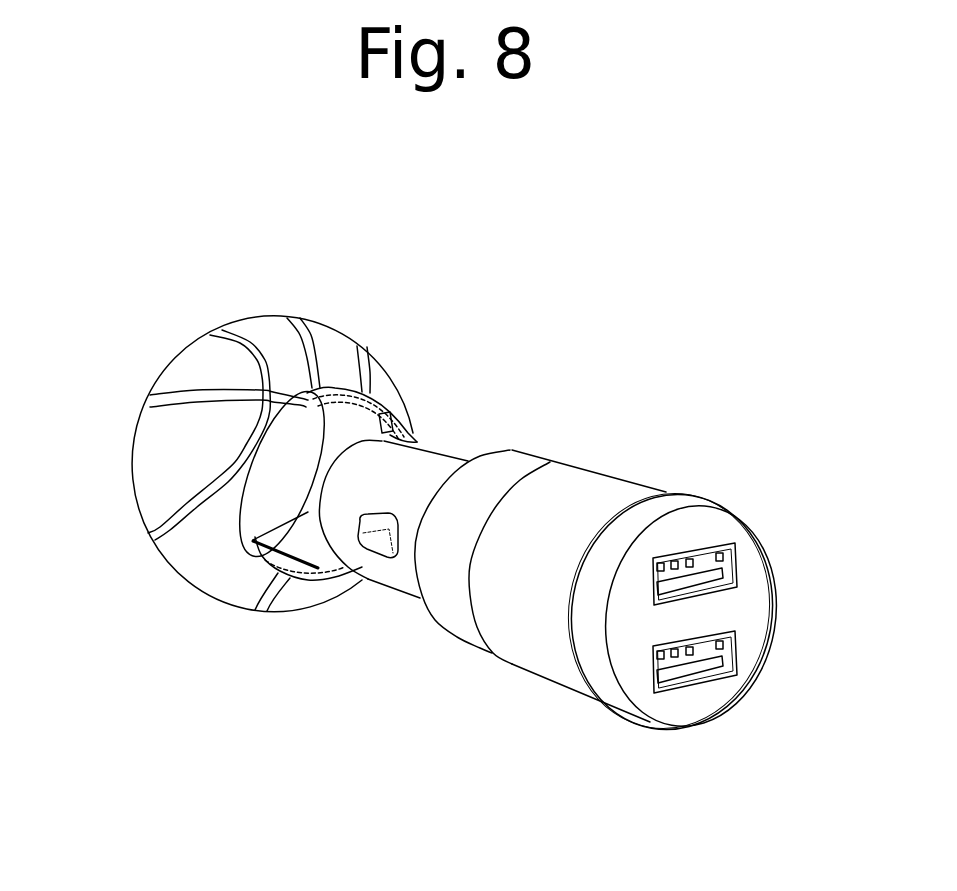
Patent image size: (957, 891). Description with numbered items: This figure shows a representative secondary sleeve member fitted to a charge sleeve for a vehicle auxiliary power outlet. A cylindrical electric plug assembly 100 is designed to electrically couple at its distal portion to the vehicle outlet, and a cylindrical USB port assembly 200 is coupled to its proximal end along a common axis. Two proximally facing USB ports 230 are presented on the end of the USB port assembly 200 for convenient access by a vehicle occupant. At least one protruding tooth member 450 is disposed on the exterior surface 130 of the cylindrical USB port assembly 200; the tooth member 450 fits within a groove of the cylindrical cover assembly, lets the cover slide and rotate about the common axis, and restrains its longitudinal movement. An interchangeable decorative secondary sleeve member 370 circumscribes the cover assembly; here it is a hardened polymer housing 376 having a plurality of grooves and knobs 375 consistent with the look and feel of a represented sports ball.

The cylindrical electric plug assembly 100 is at (336, 724).
The exterior surface 130 is at (531, 667).
The cylindrical USB port assembly 200 is at (602, 755).
The USB port 230 is at (739, 565).
The decorative secondary sleeve member 370 is at (251, 301).
The grooves and knobs 375 is at (160, 497).
The hardened polymer housing 376 is at (189, 350).
The protruding tooth member 450 is at (601, 468).